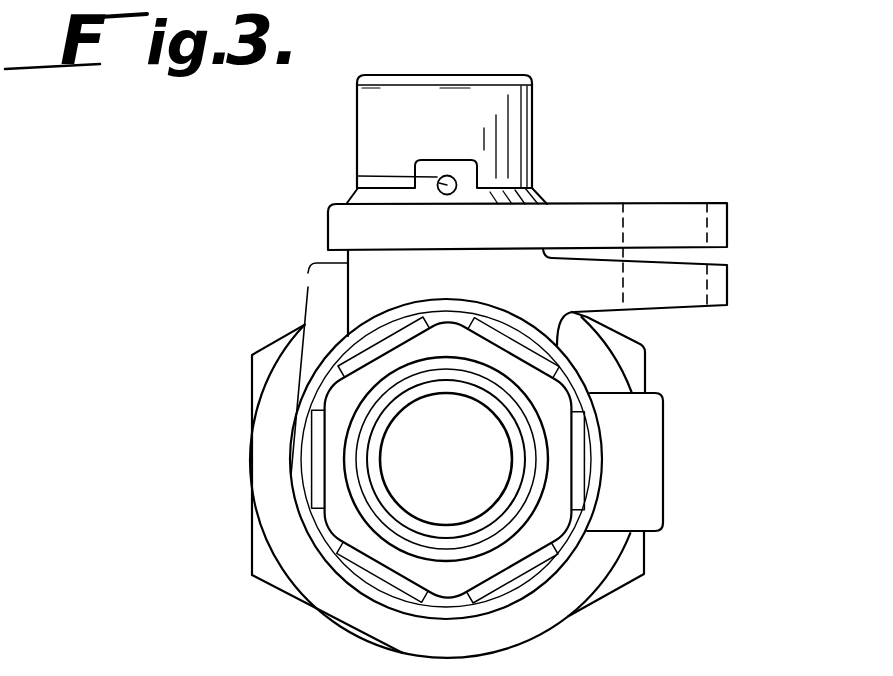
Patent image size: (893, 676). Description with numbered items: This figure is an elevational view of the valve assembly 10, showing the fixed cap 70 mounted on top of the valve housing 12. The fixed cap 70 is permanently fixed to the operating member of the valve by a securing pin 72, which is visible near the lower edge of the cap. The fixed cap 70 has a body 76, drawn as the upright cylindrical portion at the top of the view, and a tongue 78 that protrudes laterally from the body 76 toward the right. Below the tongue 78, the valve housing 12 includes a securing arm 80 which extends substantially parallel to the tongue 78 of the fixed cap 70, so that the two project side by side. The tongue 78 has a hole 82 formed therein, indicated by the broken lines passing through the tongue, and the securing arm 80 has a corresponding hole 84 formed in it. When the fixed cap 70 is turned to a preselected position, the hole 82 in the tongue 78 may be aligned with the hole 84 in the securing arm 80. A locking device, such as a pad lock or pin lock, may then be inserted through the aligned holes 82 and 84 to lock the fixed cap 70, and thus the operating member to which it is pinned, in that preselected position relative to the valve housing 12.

The valve assembly 10 is at (284, 212).
The valve housing 12 is at (251, 402).
The fixed cap 70 is at (533, 129).
The securing pin 72 is at (358, 176).
The body 76 is at (485, 92).
The tongue 78 is at (718, 226).
The securing arm 80 is at (720, 283).
The hole 82 is at (702, 176).
The hole 84 is at (680, 307).